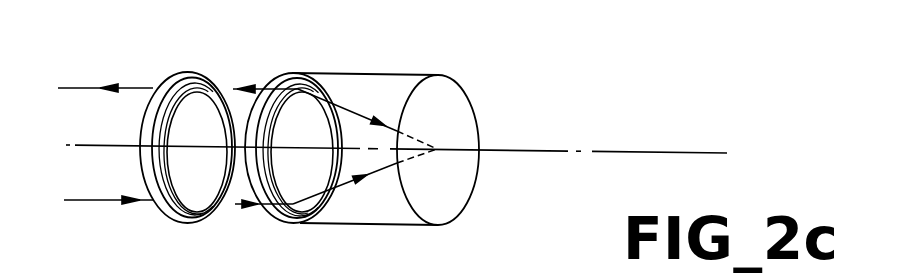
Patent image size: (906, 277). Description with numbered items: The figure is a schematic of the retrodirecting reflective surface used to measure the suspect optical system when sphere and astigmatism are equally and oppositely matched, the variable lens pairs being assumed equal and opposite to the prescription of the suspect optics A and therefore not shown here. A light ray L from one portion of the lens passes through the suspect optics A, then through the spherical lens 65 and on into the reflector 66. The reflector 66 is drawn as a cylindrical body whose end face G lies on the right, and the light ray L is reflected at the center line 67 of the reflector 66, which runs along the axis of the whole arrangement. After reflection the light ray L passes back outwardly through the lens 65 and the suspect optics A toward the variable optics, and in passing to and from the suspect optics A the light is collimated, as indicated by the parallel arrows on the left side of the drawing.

The suspect optics A is at (186, 64).
The light ray L is at (100, 200).
The spherical lens 65 is at (290, 75).
The reflector 66 is at (465, 90).
The center line 67 is at (523, 152).
The end face G is at (474, 200).